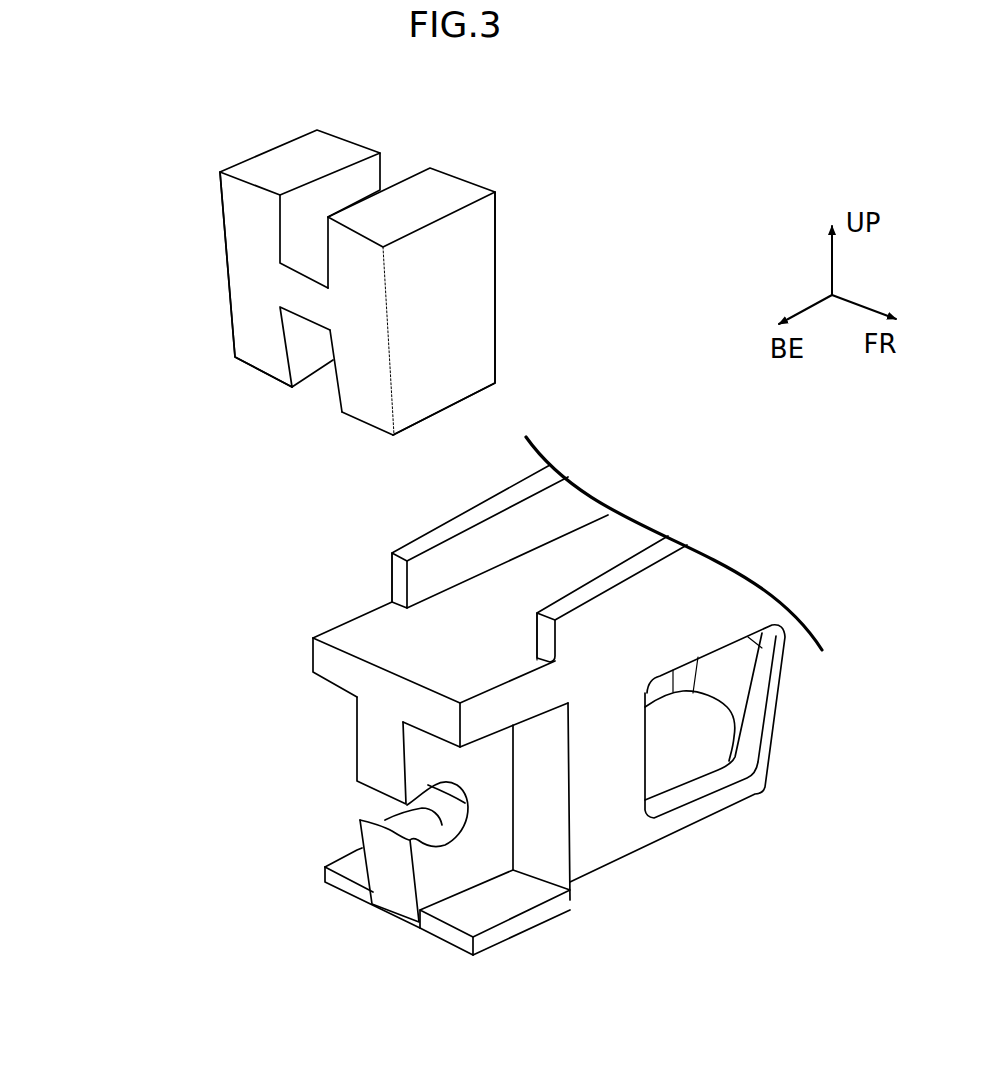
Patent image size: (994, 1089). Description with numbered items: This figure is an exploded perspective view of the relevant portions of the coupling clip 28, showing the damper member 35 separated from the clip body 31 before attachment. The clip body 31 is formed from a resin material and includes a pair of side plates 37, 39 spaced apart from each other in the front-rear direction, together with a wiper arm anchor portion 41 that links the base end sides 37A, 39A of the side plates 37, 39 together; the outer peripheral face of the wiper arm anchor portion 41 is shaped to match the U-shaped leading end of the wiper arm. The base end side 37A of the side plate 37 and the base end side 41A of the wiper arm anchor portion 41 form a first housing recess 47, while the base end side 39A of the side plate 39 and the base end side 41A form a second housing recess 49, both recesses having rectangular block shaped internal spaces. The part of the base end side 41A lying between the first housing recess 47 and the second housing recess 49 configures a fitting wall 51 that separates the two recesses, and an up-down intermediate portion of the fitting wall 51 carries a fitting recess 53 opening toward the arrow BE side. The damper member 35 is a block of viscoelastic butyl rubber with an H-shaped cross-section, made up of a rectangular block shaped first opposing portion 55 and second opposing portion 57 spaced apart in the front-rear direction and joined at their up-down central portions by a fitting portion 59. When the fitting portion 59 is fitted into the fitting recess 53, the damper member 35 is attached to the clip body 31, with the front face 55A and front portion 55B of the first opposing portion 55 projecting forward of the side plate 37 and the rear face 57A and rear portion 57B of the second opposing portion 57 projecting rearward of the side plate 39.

The coupling clip 28 is at (572, 228).
The clip body 31 is at (792, 716).
The damper member 35 is at (366, 292).
The side plate 37 is at (745, 789).
The base end side of side plate 37A is at (608, 822).
The side plate 39 is at (428, 505).
The base end side of side plate 39A is at (395, 552).
The wiper arm anchor portion 41 is at (616, 543).
The base end side of wiper arm anchor portion 41A is at (383, 638).
The first housing recess 47 is at (470, 913).
The second housing recess 49 is at (351, 862).
The fitting wall 51 is at (394, 902).
The fitting recess 53 is at (417, 809).
The first opposing portion 55 is at (505, 335).
The front face of first opposing portion 55A is at (463, 318).
The front portion of first opposing portion 55B is at (444, 313).
The second opposing portion 57 is at (214, 259).
The rear face of second opposing portion 57A is at (222, 265).
The rear portion of second opposing portion 57B is at (250, 313).
The fitting portion 59 is at (312, 315).